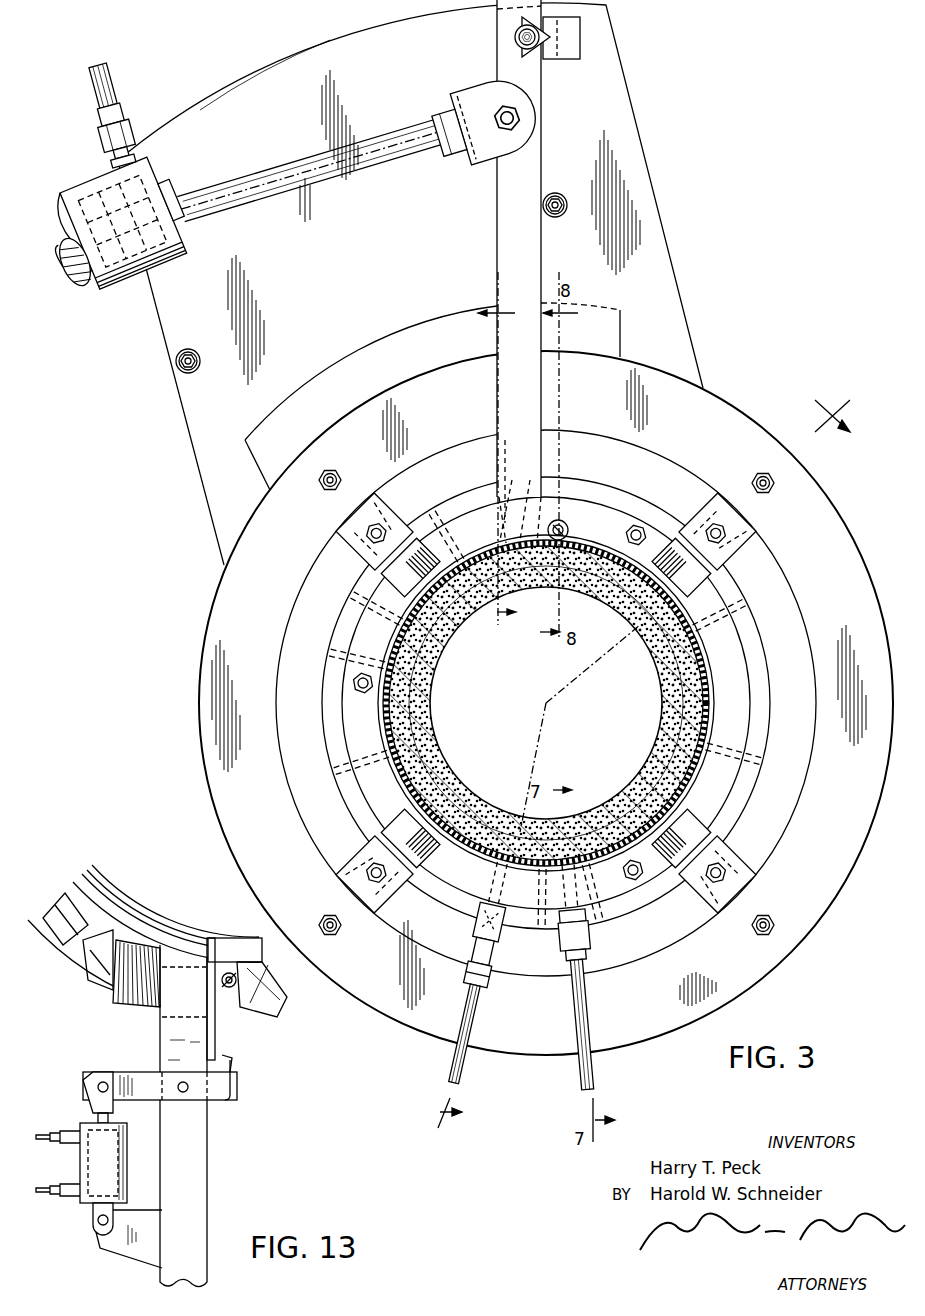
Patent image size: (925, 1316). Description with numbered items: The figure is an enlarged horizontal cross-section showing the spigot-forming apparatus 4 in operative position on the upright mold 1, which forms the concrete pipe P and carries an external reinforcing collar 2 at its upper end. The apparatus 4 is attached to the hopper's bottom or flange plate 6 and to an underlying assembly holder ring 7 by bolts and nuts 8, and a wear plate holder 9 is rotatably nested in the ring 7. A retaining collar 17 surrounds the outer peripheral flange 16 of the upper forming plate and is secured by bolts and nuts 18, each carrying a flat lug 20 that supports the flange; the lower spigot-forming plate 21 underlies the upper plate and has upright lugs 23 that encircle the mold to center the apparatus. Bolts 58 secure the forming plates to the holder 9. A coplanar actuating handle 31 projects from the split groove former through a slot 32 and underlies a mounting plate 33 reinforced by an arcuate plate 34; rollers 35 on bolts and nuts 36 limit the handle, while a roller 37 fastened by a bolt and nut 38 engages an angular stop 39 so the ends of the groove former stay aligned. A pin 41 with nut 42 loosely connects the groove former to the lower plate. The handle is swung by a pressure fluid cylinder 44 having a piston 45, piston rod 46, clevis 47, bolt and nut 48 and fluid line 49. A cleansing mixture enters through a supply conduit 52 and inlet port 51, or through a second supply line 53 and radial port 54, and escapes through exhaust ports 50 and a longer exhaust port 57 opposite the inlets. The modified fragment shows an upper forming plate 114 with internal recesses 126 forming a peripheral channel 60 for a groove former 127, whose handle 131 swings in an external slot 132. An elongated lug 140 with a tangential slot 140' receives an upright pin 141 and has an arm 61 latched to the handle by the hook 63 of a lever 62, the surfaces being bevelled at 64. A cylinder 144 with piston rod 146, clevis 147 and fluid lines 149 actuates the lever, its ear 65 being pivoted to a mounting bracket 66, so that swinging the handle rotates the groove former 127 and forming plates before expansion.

In FIG. 3, the upright mold 1 is at (650, 800).
In FIG. 3, the external reinforcing collar 2 is at (758, 770).
In FIG. 3, the apparatus 4 is at (185, 604).
In FIG. 3, the bottom or flange plate 6 is at (632, 751).
In FIG. 3, the assembly holder ring 7 is at (815, 930).
In FIG. 3, the bolts and nuts 8 is at (775, 487).
In FIG. 3, the wear plate holder 9 is at (508, 448).
In FIG. 3, the outer peripheral flange 16 is at (810, 756).
In FIG. 3, the retaining ring or collar 17 is at (300, 783).
In FIG. 3, the bolts and nuts 18 is at (382, 520).
In FIG. 3, the flat lug 20 is at (730, 502).
In FIG. 3, the lower spigot-forming plate 21 is at (358, 618).
In FIG. 3, the upright lugs 23 is at (716, 574).
In FIG. 3, the actuating handle 31 is at (494, 246).
In FIG. 3, the slot 32 is at (484, 492).
In FIG. 3, the mounting plate 33 is at (290, 62).
In FIG. 3, the arcuate plate 34 is at (398, 335).
In FIG. 3, the rollers 35 is at (160, 385).
In FIG. 3, the bolts and nuts 36 is at (178, 358).
In FIG. 3, the roller 37 is at (515, 30).
In FIG. 3, the bolt and nut 38 is at (518, 43).
In FIG. 3, the angular stop 39 is at (580, 42).
In FIG. 3, the pin 41 is at (565, 525).
In FIG. 3, the nut 42 is at (630, 536).
In FIG. 3, the pressure fluid operating cylinder 44 is at (66, 178).
In FIG. 3, the piston 45 is at (66, 272).
In FIG. 3, the piston rod 46 is at (268, 168).
In FIG. 3, the clevis 47 is at (462, 160).
In FIG. 3, the bolt and nut 48 is at (520, 119).
In FIG. 3, the fluid line 49 is at (104, 86).
In FIG. 3, the exhaust ports 50 is at (345, 660).
In FIG. 3, the inlet port 51 is at (485, 880).
In FIG. 3, the supply conduit 52 is at (470, 1010).
In FIG. 3, the second supply line 53 is at (600, 1026).
In FIG. 3, the radial port 54 is at (610, 920).
In FIG. 3, the exhaust port 57 is at (515, 508).
In FIG. 3, the bolts 58 is at (352, 684).
In FIG. 13, the peripheral channel 60 is at (158, 940).
In FIG. 13, the arm 61 is at (210, 1030).
In FIG. 13, the lever 62 is at (142, 1072).
In FIG. 13, the hook 63 is at (238, 1076).
In FIG. 13, the bevel 64 is at (235, 1058).
In FIG. 13, the apertured ear or lug 65 is at (92, 1210).
In FIG. 13, the mounting bracket 66 is at (122, 1250).
In FIG. 13, the upper spigot-forming plate 114 is at (100, 896).
In FIG. 13, the internal recesses 126 is at (128, 920).
In FIG. 13, the groove former 127 is at (87, 868).
In FIG. 13, the actuating handle 131 is at (210, 1145).
In FIG. 13, the external slot 132 is at (118, 1000).
In FIG. 13, the ear or lug 140 is at (222, 983).
In FIG. 13, the slot 140' is at (256, 961).
In FIG. 13, the upright pin 141 is at (220, 981).
In FIG. 13, the pressure fluid operating cylinder 144 is at (140, 1120).
In FIG. 13, the piston rod 146 is at (96, 1118).
In FIG. 13, the clevis 147 is at (96, 1075).
In FIG. 13, the fluid lines 149 is at (40, 1190).
In FIG. 3, the pipe P is at (430, 703).